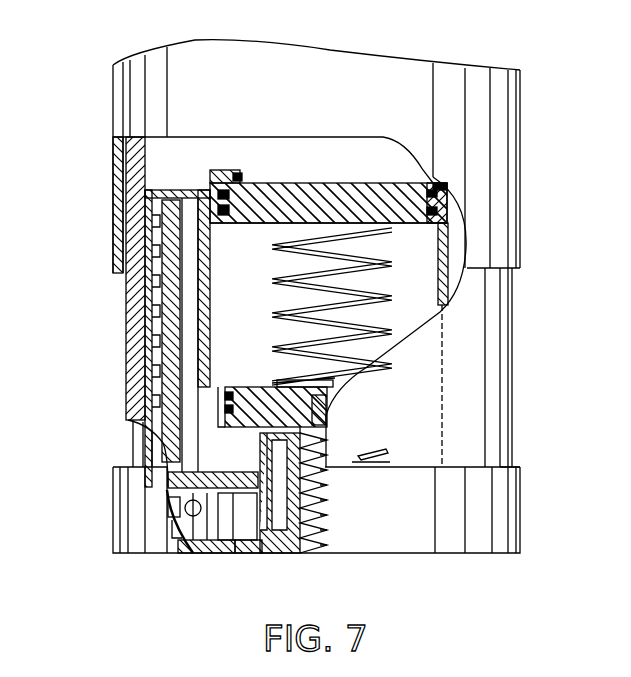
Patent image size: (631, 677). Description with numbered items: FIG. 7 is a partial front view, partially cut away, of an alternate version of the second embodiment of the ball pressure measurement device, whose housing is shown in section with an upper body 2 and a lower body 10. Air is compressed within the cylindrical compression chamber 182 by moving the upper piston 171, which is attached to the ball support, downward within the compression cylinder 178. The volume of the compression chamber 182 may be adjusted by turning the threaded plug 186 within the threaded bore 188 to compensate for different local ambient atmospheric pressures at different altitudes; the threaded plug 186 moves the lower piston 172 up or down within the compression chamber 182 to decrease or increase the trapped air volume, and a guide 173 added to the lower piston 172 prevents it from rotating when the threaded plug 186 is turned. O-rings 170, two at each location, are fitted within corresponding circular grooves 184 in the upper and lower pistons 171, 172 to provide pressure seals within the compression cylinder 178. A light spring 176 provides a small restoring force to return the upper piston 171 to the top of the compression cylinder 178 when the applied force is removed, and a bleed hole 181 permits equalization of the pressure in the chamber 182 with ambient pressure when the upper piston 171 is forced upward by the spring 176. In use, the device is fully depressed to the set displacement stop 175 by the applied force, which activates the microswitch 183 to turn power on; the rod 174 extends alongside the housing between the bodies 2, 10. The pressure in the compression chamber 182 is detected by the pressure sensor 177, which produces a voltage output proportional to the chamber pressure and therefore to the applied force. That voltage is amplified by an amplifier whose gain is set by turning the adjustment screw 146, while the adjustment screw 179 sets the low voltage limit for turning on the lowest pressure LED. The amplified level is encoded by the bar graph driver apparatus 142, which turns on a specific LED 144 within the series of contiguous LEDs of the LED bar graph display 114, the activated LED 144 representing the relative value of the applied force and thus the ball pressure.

The upper housing body 2 is at (500, 120).
The lower housing body 10 is at (500, 495).
The LED bar graph display 114 is at (105, 357).
The bar graph driver apparatus 142 is at (168, 508).
The light emitting diode 144 is at (150, 273).
The adjustment screw 146 is at (227, 555).
The O-ring 170 is at (432, 192).
The upper piston 171 is at (332, 185).
The lower piston 172 is at (322, 393).
The guide 173 is at (305, 500).
The rod 174 is at (500, 372).
The set displacement stop 175 is at (515, 462).
The light spring 176 is at (367, 307).
The pressure sensor 177 is at (330, 404).
The compression cylinder 178 is at (230, 178).
The adjustment screw 179 is at (167, 556).
The bleed hole 181 is at (437, 232).
The compression chamber 182 is at (268, 291).
The microswitch 183 is at (387, 453).
The circular groove 184 is at (243, 200).
The threaded plug 186 is at (323, 553).
The threaded bore 188 is at (268, 552).